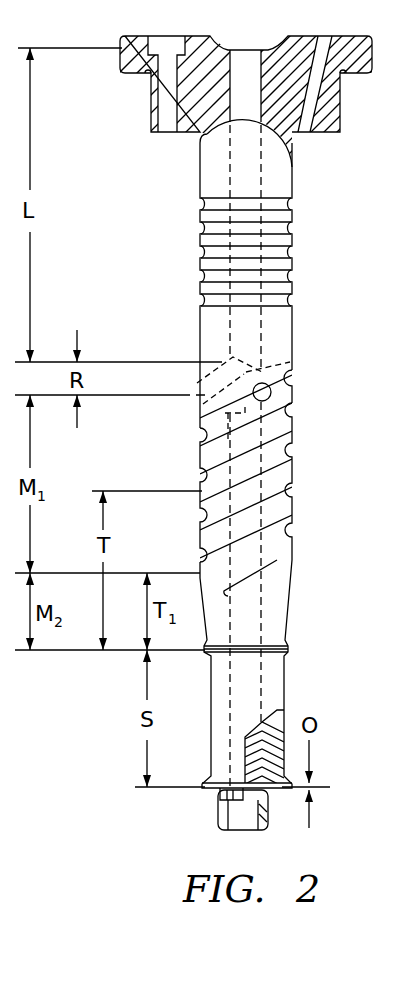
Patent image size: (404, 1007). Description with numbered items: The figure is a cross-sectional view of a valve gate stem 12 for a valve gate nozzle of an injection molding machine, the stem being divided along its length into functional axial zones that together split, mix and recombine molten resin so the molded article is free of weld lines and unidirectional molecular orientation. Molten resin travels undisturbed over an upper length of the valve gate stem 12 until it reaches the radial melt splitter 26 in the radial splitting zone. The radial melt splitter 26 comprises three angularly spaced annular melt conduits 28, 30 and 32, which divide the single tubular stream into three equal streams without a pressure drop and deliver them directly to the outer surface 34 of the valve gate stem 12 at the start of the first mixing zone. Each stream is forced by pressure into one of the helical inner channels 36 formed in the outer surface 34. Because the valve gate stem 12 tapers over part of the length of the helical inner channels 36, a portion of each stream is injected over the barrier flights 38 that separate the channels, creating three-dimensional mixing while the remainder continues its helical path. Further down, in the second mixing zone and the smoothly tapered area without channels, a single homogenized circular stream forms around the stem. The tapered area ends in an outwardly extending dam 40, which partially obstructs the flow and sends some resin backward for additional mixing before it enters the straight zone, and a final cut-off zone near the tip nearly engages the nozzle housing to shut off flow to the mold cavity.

The valve gate stem 12 is at (254, 612).
The radial melt splitter 26 is at (243, 362).
The annular melt conduit 28 is at (200, 406).
The annular melt conduit 30 is at (271, 393).
The annular melt conduit 32 is at (296, 378).
The outer surface 34 is at (293, 483).
The helical inner channels 36 is at (294, 452).
The barrier flights 38 is at (278, 527).
The outwardly extending dam 40 is at (290, 650).